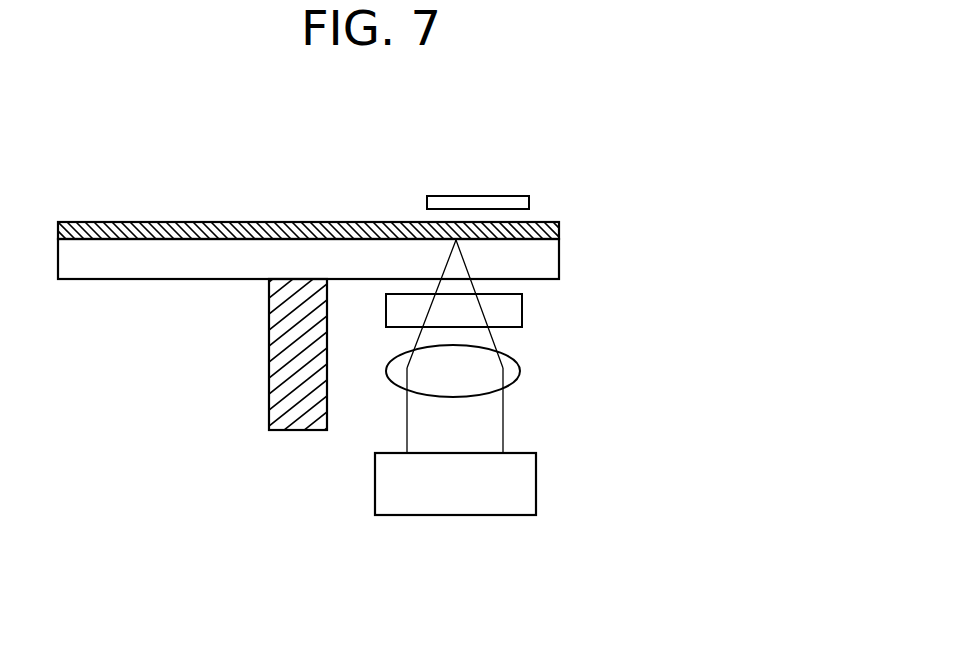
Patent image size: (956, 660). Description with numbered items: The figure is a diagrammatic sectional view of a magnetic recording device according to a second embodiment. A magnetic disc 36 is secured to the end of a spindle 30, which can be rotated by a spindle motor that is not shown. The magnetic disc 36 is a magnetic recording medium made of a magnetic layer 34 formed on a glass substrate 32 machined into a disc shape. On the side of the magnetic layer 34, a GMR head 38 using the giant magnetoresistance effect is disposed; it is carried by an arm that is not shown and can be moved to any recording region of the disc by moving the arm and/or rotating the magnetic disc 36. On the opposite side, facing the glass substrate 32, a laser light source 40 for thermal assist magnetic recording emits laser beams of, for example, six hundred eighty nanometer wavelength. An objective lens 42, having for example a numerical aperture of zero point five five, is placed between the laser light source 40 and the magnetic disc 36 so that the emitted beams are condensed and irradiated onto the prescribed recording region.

The spindle 30 is at (292, 340).
The glass substrate 32 is at (552, 266).
The magnetic layer 34 is at (557, 228).
The magnetic disc 36 is at (656, 215).
The GMR head 38 is at (463, 202).
The laser light source 40 is at (518, 485).
The objective lens 42 is at (547, 294).